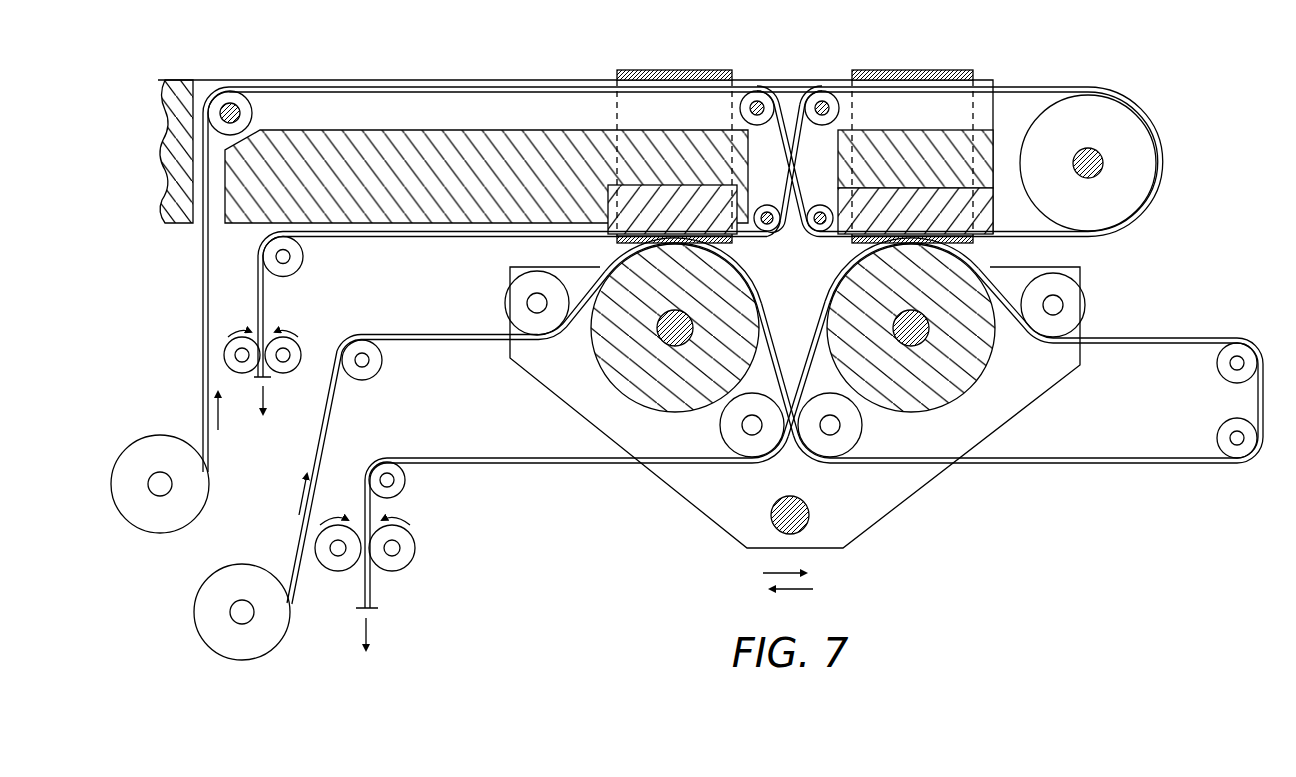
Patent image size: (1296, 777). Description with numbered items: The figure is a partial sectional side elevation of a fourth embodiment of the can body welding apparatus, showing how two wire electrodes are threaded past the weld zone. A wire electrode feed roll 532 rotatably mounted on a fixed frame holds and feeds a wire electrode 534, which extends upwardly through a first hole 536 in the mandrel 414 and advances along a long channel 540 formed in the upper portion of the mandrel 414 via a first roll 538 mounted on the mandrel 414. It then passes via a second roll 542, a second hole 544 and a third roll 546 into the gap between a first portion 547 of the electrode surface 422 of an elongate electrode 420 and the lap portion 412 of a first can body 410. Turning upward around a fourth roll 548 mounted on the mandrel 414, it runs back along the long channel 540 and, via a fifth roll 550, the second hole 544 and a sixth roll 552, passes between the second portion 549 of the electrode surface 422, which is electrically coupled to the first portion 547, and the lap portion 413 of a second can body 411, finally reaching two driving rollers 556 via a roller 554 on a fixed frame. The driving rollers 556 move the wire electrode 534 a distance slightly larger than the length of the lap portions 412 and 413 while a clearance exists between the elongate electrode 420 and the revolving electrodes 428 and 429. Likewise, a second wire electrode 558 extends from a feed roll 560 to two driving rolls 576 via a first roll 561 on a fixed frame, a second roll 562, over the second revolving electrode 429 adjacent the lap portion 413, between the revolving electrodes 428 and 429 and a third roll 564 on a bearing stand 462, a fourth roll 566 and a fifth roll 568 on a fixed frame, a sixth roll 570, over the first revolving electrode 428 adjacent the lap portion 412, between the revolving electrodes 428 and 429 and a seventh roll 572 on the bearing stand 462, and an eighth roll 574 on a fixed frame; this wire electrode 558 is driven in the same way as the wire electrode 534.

The first can body 410 is at (965, 70).
The second can body 411 is at (705, 70).
The lap portion 412 is at (968, 243).
The lap portion 413 is at (765, 290).
The mandrel 414 is at (993, 84).
The elongate electrode 420 is at (1008, 220).
The electrode surface 422 is at (732, 236).
The first revolving electrode 428 is at (930, 410).
The second revolving electrode 429 is at (672, 410).
The bearing stand 462 is at (557, 398).
The wire electrode feed roll 532 is at (198, 500).
The wire electrode 534 is at (210, 442).
The first hole 536 is at (212, 224).
The first roll 538 is at (252, 106).
The long channel 540 is at (492, 103).
The second roll 542 is at (750, 93).
The second hole 544 is at (828, 138).
The third roll 546 is at (785, 262).
The first portion 547 is at (995, 197).
The fourth roll 548 is at (1150, 188).
The second portion 549 is at (608, 236).
The fifth roll 550 is at (812, 88).
The sixth roll 552 is at (762, 204).
The roller 554 is at (298, 260).
The driving rollers 556 is at (272, 332).
The wire electrode 558 is at (293, 585).
The feed roll 560 is at (265, 647).
The first roll 561 is at (377, 370).
The second roll 562 is at (505, 305).
The third roll 564 is at (835, 458).
The fourth roll 566 is at (1235, 458).
The fifth roll 568 is at (1242, 343).
The sixth roll 570 is at (1080, 312).
The seventh roll 572 is at (748, 458).
The eighth roll 574 is at (403, 487).
The driving rolls 576 is at (348, 566).